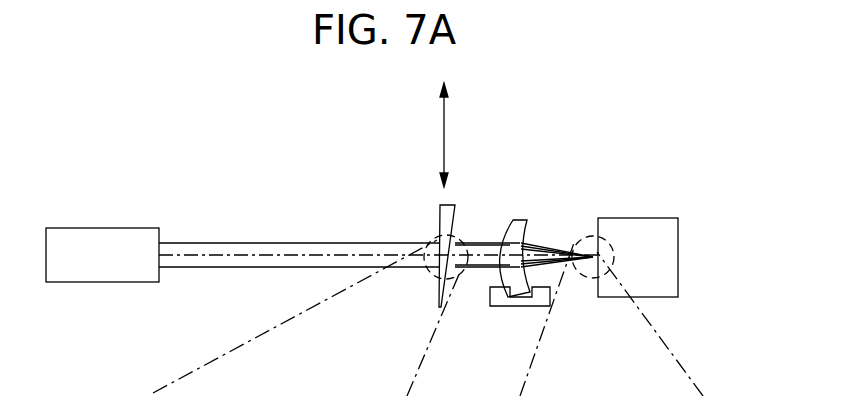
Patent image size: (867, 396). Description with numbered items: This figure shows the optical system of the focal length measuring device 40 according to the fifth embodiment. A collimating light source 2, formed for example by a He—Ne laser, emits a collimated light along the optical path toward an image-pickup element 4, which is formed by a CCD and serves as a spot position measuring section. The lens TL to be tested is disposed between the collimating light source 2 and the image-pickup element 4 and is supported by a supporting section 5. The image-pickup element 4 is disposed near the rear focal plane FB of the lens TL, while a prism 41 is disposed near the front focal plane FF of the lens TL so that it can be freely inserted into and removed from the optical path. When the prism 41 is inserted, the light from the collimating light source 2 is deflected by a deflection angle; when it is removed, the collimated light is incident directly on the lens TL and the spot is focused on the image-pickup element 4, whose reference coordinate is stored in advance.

The collimating light source 2 is at (110, 228).
The focal length measuring device 40 is at (268, 213).
The prism 41 is at (439, 229).
The supporting section 5 is at (490, 294).
The image-pickup element 4 is at (678, 247).
The lens to be tested TL is at (517, 242).
The front focal plane FF is at (439, 289).
The rear focal plane FB is at (596, 285).